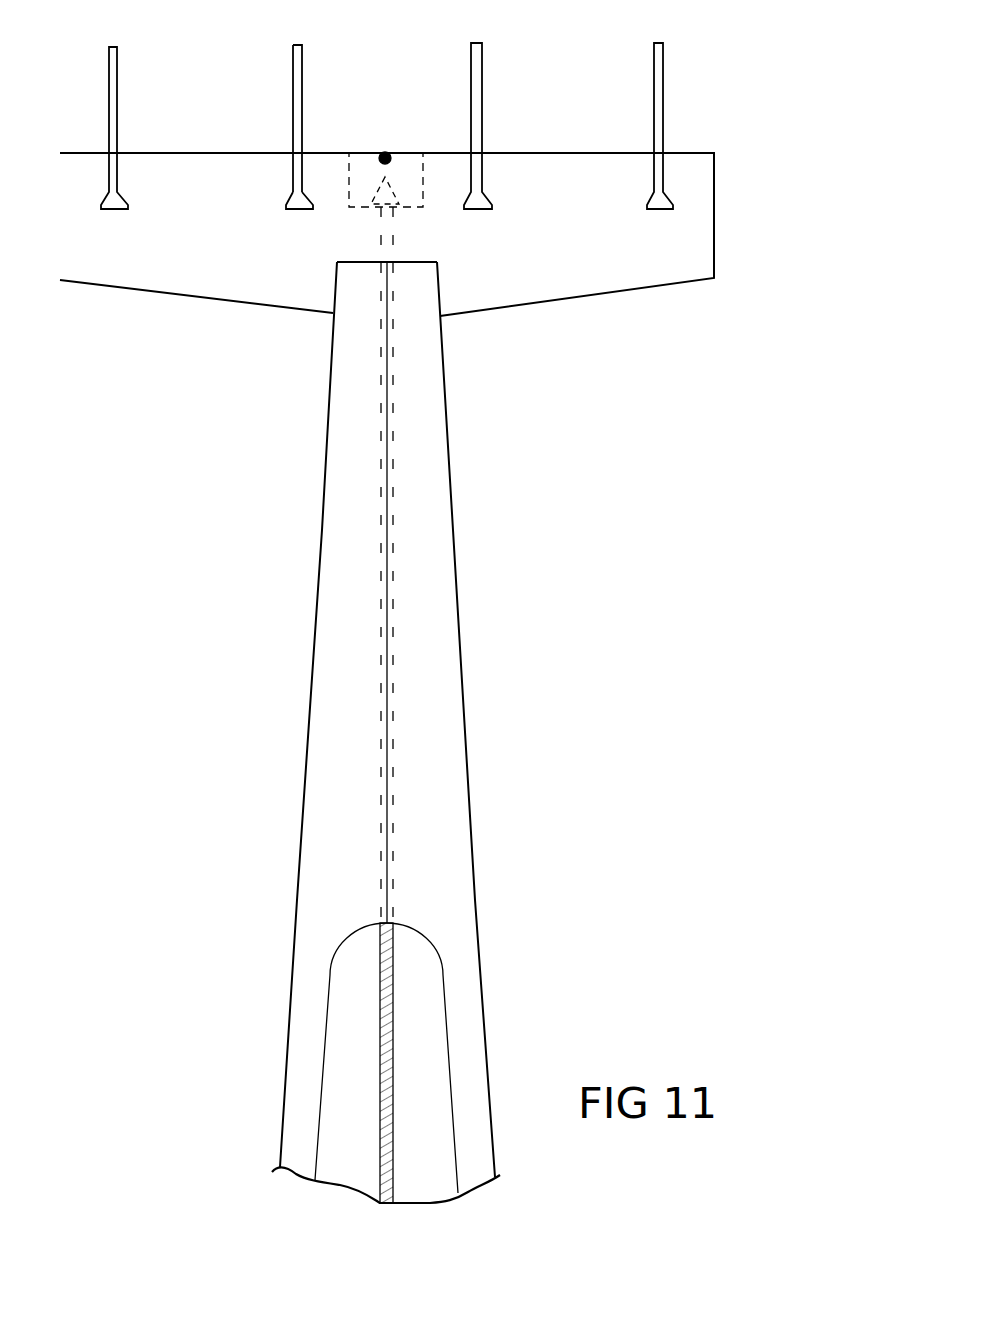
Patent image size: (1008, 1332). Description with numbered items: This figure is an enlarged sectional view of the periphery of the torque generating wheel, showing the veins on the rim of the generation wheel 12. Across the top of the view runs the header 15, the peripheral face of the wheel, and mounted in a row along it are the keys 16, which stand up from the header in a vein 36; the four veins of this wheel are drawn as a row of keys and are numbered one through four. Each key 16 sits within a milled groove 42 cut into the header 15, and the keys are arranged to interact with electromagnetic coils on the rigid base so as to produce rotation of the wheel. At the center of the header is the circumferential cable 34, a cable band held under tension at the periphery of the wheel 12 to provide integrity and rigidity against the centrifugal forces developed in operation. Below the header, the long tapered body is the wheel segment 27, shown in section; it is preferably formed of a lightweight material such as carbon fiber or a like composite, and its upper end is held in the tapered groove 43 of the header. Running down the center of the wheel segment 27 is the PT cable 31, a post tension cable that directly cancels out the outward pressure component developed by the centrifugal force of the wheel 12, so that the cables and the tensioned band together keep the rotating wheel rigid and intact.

The generation wheel 12 is at (206, 494).
The header 15 is at (715, 198).
The keys 16 is at (482, 77).
The wheel segment 27 is at (455, 507).
The PT cable 31 is at (378, 1020).
The circumferential cable 34 is at (385, 150).
The veins 36 is at (101, 103).
The milled grooves 42 is at (285, 199).
The tapered groove 43 is at (441, 268).